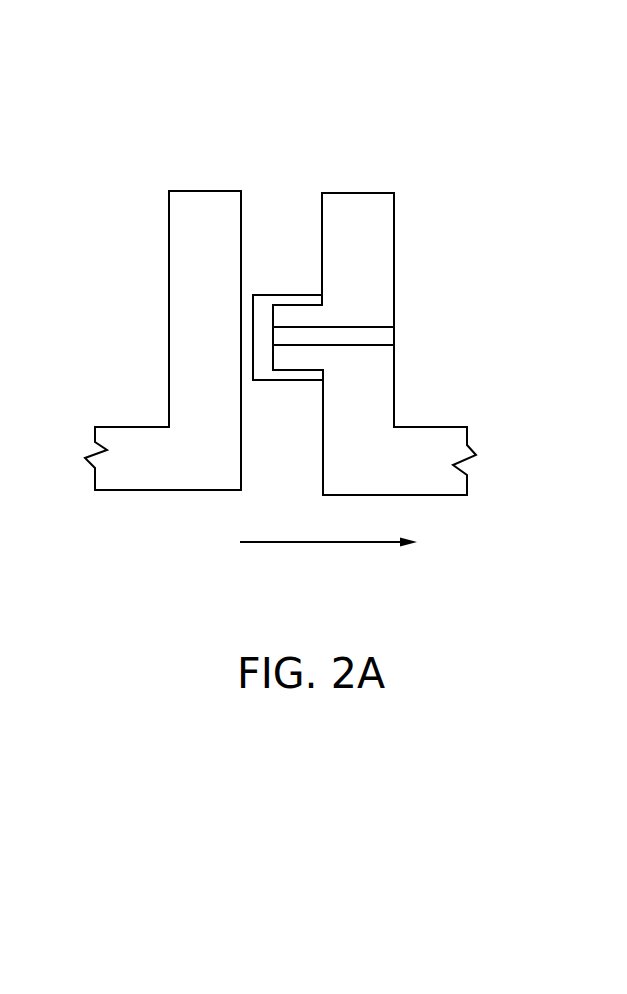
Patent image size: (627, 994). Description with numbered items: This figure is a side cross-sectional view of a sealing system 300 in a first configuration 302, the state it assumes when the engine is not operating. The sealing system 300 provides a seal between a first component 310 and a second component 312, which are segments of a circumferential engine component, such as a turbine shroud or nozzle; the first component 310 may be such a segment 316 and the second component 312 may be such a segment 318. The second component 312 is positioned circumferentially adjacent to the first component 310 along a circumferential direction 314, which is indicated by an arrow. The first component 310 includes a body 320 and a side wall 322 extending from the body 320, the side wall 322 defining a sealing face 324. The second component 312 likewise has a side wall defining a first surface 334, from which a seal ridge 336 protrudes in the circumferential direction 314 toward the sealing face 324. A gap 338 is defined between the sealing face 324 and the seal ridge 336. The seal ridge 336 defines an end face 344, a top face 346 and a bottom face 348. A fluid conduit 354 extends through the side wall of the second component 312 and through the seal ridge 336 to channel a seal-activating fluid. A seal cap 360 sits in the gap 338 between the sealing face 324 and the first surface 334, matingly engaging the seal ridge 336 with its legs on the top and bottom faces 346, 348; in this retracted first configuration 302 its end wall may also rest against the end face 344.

The sealing system 300 is at (137, 156).
The first configuration 302 is at (308, 162).
The first component 310 is at (125, 492).
The second component 312 is at (394, 208).
The circumferential direction 314 is at (327, 543).
The segment 316 is at (138, 350).
The segment 318 is at (423, 404).
The body 320 is at (107, 440).
The side wall 322 is at (169, 252).
The sealing face 324 is at (242, 203).
The first surface 334 is at (322, 208).
The seal ridge 336 is at (300, 360).
The gap 338 is at (292, 217).
The end face 344 is at (272, 360).
The top face 346 is at (306, 302).
The bottom face 348 is at (303, 372).
The fluid conduit 354 is at (378, 327).
The seal cap 360 is at (310, 380).